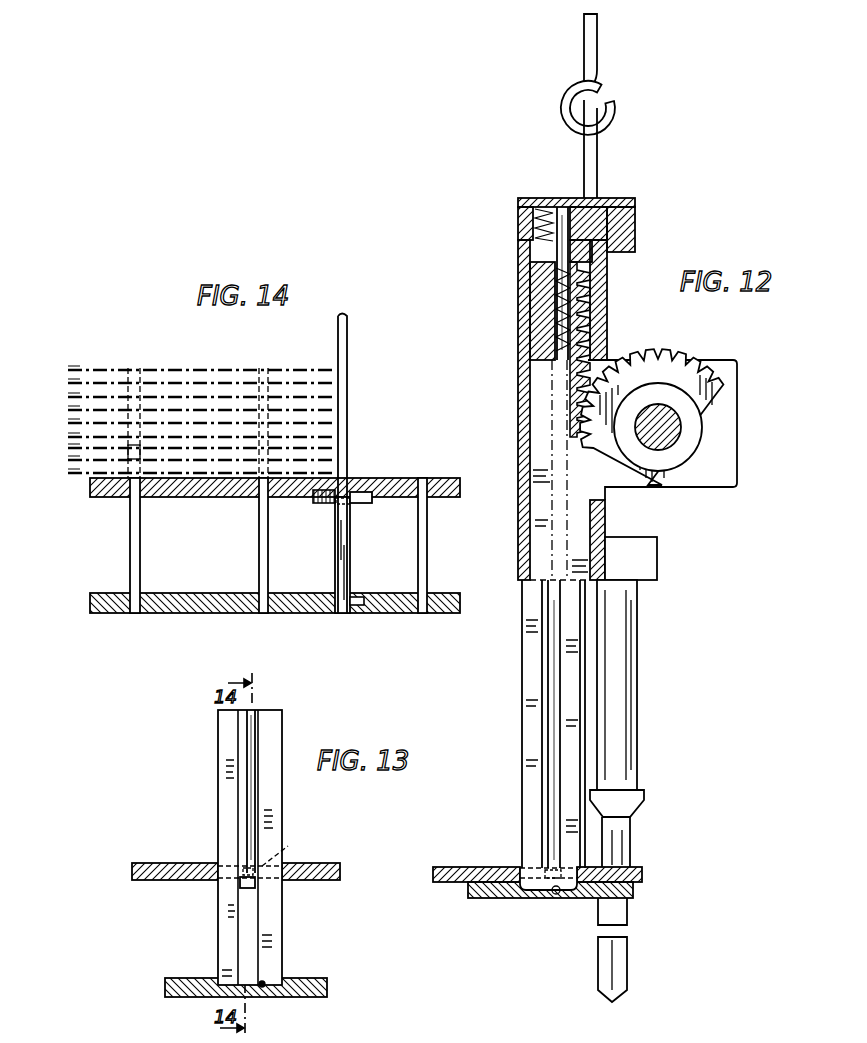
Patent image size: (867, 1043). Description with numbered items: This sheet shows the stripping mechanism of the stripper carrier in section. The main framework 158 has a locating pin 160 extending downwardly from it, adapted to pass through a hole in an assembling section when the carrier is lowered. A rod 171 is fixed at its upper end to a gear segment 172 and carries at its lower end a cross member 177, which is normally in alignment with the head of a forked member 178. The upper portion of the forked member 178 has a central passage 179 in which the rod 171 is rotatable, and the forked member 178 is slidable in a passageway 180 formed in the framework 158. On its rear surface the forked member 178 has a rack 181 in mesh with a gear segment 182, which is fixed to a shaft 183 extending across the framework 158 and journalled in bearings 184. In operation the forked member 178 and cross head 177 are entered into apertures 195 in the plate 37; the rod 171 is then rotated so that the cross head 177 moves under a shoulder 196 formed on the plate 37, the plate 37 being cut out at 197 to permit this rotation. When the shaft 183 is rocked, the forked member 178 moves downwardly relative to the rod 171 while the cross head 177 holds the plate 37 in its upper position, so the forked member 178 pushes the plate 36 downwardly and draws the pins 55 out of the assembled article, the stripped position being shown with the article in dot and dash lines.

In FIG. 12, the plate 36 is at (478, 896).
In FIG. 14, the plate 36 is at (164, 606).
In FIG. 13, the plate 36 is at (188, 983).
In FIG. 12, the plate 37 is at (446, 872).
In FIG. 14, the plate 37 is at (97, 496).
In FIG. 13, the plate 37 is at (140, 882).
In FIG. 14, the pins 55 is at (258, 535).
In FIG. 12, the main framework 158 is at (528, 265).
In FIG. 12, the locating pin 160 is at (630, 716).
In FIG. 12, the rod 171 is at (556, 676).
In FIG. 14, the rod 171 is at (351, 346).
In FIG. 13, the rod 171 is at (252, 808).
In FIG. 12, the gear segment 172 is at (546, 207).
In FIG. 12, the cross member 177 is at (527, 866).
In FIG. 14, the cross member 177 is at (361, 504).
In FIG. 13, the cross member 177 is at (243, 882).
In FIG. 12, the forked member 178 is at (531, 640).
In FIG. 14, the forked member 178 is at (346, 571).
In FIG. 13, the forked member 178 is at (268, 935).
In FIG. 12, the central passage 179 is at (554, 325).
In FIG. 12, the passageway 180 is at (530, 295).
In FIG. 12, the rack 181 is at (586, 318).
In FIG. 12, the gear segment 182 is at (700, 365).
In FIG. 12, the shaft 183 is at (676, 440).
In FIG. 12, the bearings 184 is at (722, 422).
In FIG. 12, the apertures 195 is at (568, 866).
In FIG. 14, the apertures 195 is at (340, 506).
In FIG. 13, the apertures 195 is at (226, 862).
In FIG. 14, the shoulder 196 is at (328, 504).
In FIG. 13, the shoulder 196 is at (294, 846).
In FIG. 12, the cut out 197 is at (556, 898).
In FIG. 14, the cut out 197 is at (358, 606).
In FIG. 13, the cut out 197 is at (266, 988).